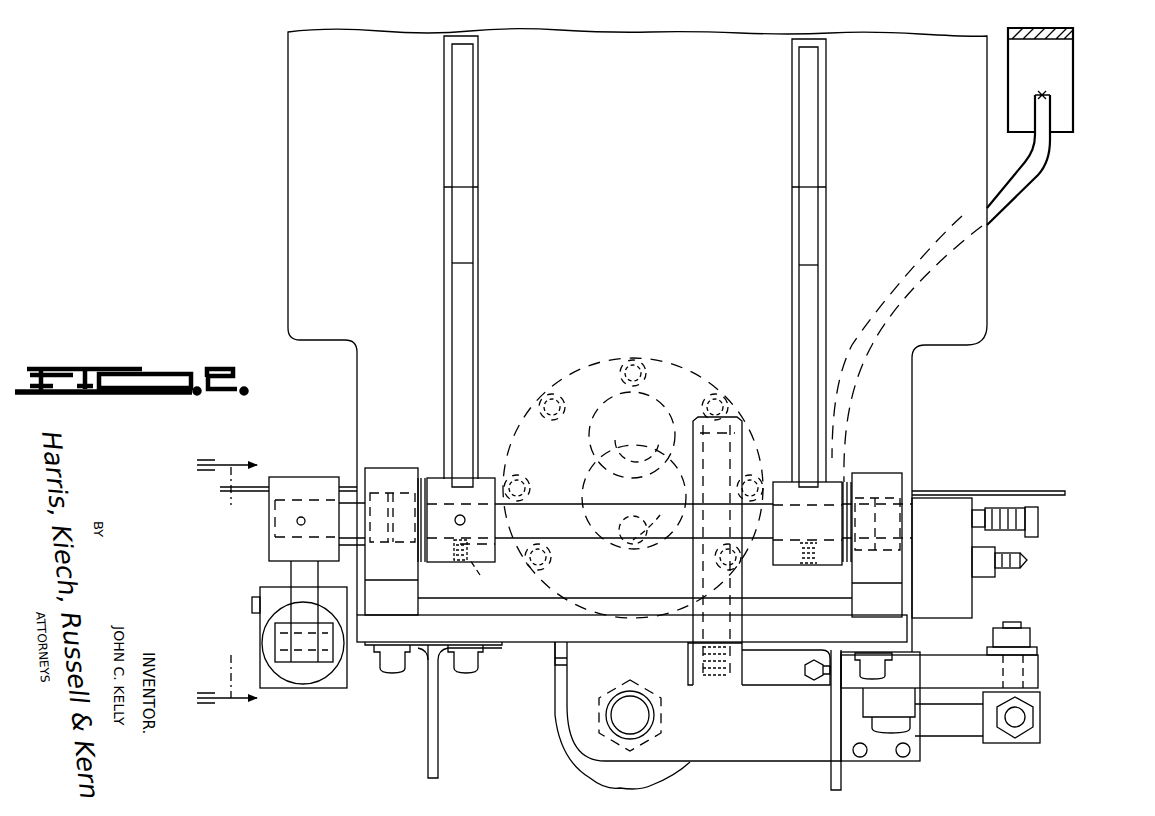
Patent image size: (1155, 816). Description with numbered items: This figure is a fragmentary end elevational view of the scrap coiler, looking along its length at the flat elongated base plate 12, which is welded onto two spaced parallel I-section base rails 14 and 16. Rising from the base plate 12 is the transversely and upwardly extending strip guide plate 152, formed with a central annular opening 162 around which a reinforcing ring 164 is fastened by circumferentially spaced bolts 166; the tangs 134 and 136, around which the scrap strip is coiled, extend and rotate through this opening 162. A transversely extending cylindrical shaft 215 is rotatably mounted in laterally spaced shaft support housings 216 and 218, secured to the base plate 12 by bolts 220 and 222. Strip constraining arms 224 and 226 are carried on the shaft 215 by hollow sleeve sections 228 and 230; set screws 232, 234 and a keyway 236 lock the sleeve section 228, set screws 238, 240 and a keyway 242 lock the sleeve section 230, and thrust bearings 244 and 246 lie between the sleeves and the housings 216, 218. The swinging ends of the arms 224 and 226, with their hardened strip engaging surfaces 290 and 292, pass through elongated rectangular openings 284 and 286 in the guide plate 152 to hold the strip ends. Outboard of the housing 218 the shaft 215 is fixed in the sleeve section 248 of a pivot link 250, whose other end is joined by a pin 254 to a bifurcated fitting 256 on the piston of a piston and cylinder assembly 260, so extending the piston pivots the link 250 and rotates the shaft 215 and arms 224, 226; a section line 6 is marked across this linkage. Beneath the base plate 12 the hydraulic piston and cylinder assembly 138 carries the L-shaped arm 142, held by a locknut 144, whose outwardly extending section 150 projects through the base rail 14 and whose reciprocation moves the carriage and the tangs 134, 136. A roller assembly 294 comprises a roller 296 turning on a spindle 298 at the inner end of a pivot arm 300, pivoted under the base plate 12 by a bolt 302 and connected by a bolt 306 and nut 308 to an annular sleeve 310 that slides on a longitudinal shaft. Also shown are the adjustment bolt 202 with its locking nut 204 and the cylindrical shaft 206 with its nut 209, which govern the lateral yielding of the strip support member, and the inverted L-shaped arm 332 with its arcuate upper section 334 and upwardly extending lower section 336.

The section line 6- 6 is at (227, 583).
The base plate 12 is at (527, 646).
The base rail 14 is at (840, 773).
The base rail 16 is at (425, 735).
The tang 134 is at (655, 440).
The tang 136 is at (634, 514).
The piston and cylinder assembly 138 is at (520, 738).
The L-shaped arm 142 is at (724, 766).
The locknut 144 is at (668, 720).
The outwardly extending section 150 is at (885, 760).
The strip guide plate 152 is at (988, 312).
The central annular opening 162 is at (590, 380).
The reinforcing ring 164 is at (680, 380).
The bolts 166 is at (640, 360).
The adjustment bolt 202 is at (1043, 517).
The locking nut 204 is at (990, 505).
The cylindrical shaft 206 is at (1032, 564).
The nut 209 is at (990, 578).
The cylindrical shaft 215 is at (577, 543).
The shaft support housing 216 is at (895, 472).
The shaft support housing 218 is at (380, 466).
The bolts 220 is at (898, 668).
The bolts 222 is at (390, 672).
The strip constraining arm 224 is at (829, 306).
The strip constraining arm 226 is at (479, 312).
The sleeve section 228 is at (815, 516).
The sleeve section 230 is at (486, 476).
The set screw 232 is at (876, 488).
The set screw 234 is at (796, 595).
The keyway 236 is at (806, 565).
The set screw 238 is at (467, 520).
The set screw 240 is at (459, 563).
The keyway 242 is at (499, 576).
The thrust bearing 244 is at (850, 478).
The thrust bearing 246 is at (420, 476).
The sleeve section 248 is at (300, 475).
The pivot link 250 is at (290, 580).
The pin 254 is at (302, 645).
The bifurcated fitting 256 is at (296, 521).
The piston and cylinder assembly 260 is at (316, 692).
The elongated opening 284 is at (815, 99).
The elongated opening 286 is at (466, 99).
The strip engaging surface 290 is at (810, 208).
The strip engaging surface 292 is at (464, 208).
The roller assembly 294 is at (745, 414).
The roller 296 is at (780, 413).
The spindle 298 is at (622, 560).
The pivot arm 300 is at (795, 690).
The bolt 302 is at (920, 690).
The bolt 306 is at (1025, 625).
The nut 308 is at (1035, 640).
The annular sleeve 310 is at (1050, 720).
The inverted L-shaped arm 332 is at (1040, 173).
The arcuate upper section 334 is at (1067, 88).
The lower section 336 is at (1003, 208).